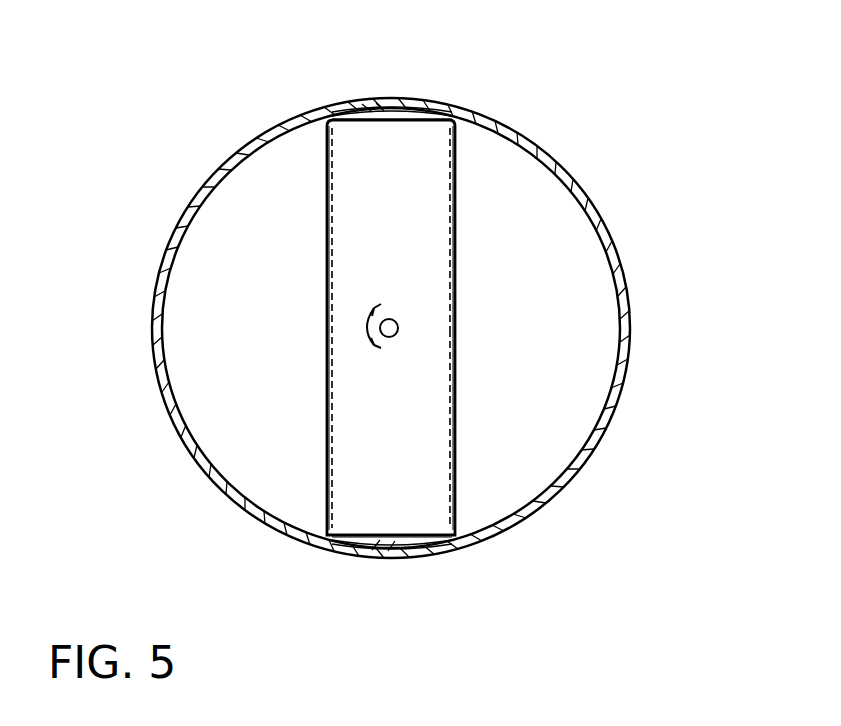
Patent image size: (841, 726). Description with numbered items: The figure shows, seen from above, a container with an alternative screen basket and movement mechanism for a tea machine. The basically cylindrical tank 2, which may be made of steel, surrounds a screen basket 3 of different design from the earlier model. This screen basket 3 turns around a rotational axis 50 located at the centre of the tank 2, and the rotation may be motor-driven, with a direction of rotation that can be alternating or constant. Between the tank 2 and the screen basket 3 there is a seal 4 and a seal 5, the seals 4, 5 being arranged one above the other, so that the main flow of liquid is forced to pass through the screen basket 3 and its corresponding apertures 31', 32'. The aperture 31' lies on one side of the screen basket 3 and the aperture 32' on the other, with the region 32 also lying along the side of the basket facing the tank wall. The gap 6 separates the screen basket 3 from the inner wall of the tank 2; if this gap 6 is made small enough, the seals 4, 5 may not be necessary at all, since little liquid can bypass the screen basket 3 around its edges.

The tank 2 is at (540, 152).
The screen basket 3 is at (340, 465).
The seal 4 is at (397, 558).
The seal 5 is at (400, 100).
The gap 6 is at (372, 112).
The aperture 31' is at (228, 325).
The aperture 32' is at (501, 187).
The right sealing strip 32 is at (553, 434).
The rotational axis 50 is at (398, 324).